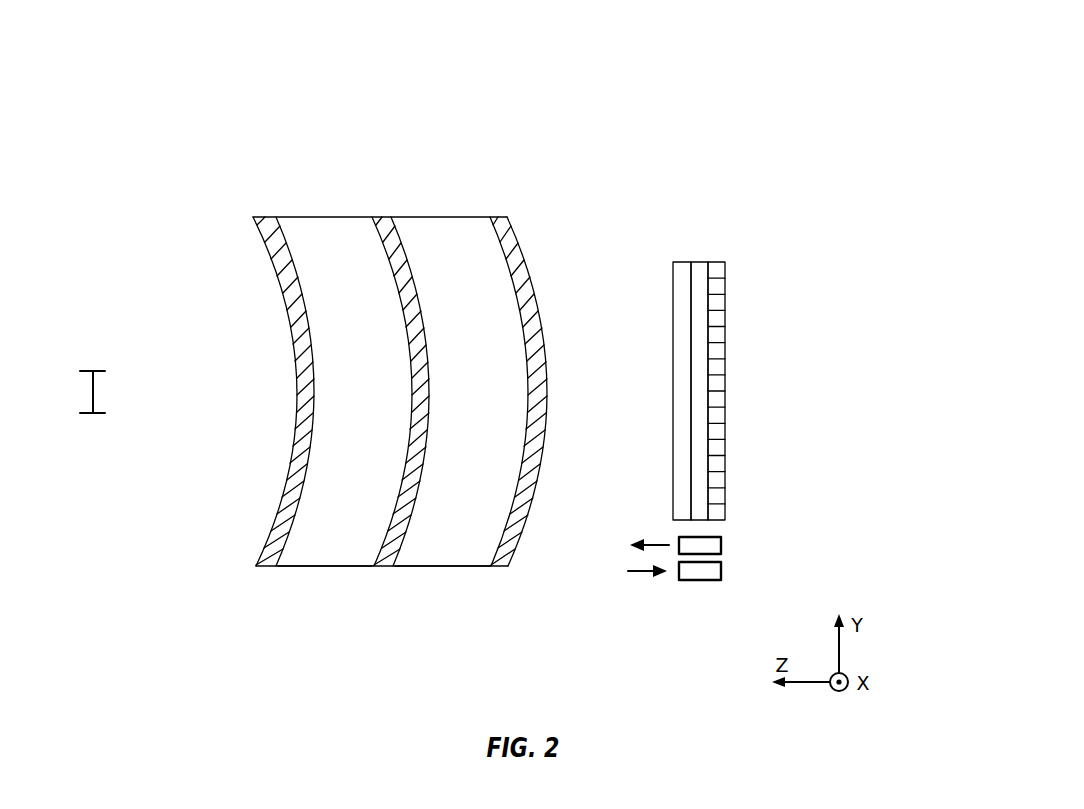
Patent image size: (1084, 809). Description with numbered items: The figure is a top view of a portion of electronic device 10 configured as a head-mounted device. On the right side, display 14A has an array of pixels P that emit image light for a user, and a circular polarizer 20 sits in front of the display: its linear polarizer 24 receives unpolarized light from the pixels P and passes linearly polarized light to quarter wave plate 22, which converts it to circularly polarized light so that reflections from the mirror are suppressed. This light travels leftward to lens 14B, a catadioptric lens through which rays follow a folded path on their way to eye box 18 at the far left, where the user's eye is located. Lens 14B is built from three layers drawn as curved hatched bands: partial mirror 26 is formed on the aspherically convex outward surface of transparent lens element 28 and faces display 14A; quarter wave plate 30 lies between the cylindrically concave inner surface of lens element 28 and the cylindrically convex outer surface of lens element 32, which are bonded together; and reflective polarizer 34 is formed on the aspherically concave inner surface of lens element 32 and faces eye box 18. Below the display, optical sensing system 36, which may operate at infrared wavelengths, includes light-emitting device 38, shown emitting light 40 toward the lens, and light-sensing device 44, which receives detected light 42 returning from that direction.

The electronic device 10 is at (919, 58).
The display 14A is at (717, 262).
The lens 14B is at (543, 185).
The eye box 18 is at (88, 416).
The circular polarizer 20 is at (708, 254).
The quarter wave plate 22 is at (683, 353).
The linear polarizer 24 is at (700, 396).
The partial mirror 26 is at (512, 542).
The transparent lens element 28 is at (437, 557).
The quarter wave plate 30 is at (393, 545).
The lens element 32 is at (311, 557).
The reflective polarizer 34 is at (268, 546).
The optical sensing system 36 is at (736, 537).
The light-emitting device 38 is at (722, 540).
The emitted light 40 is at (652, 544).
The detected light 42 is at (648, 572).
The light-sensing device 44 is at (700, 581).
The pixels P is at (718, 303).